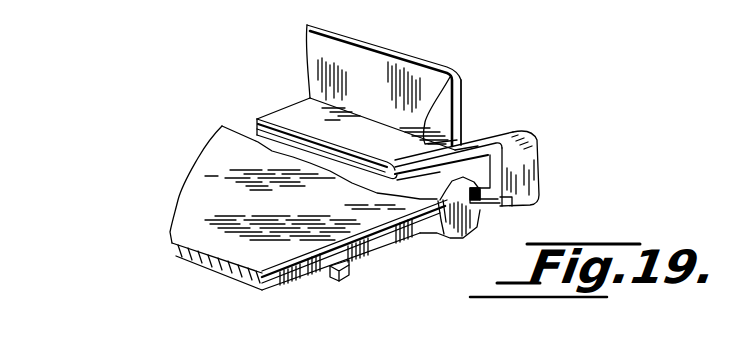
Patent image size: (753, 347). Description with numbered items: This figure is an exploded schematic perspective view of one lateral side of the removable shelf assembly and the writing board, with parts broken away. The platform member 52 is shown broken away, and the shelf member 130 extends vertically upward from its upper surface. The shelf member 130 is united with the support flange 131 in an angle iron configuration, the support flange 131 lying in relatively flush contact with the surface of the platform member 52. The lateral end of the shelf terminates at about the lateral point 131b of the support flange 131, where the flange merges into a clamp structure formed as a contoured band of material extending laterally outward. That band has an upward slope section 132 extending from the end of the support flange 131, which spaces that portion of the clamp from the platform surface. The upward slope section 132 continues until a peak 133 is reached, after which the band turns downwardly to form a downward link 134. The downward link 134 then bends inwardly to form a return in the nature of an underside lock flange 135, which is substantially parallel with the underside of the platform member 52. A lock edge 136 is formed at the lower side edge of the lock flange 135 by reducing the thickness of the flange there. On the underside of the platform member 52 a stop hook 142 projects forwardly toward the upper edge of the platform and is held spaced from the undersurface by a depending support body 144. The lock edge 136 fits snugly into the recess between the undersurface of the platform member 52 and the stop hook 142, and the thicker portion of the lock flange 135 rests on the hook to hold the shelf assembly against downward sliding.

The platform member 52 is at (262, 216).
The shelf member 130 is at (390, 47).
The support flange 131 is at (303, 118).
The lateral end of support flange 131b is at (457, 74).
The upward slope section 132 is at (463, 143).
The peak 133 is at (533, 133).
The downward link 134 is at (522, 171).
The lock flange 135 is at (463, 240).
The lock edge 136 is at (477, 209).
The stop hook 142 is at (340, 281).
The depending support body 144 is at (308, 277).